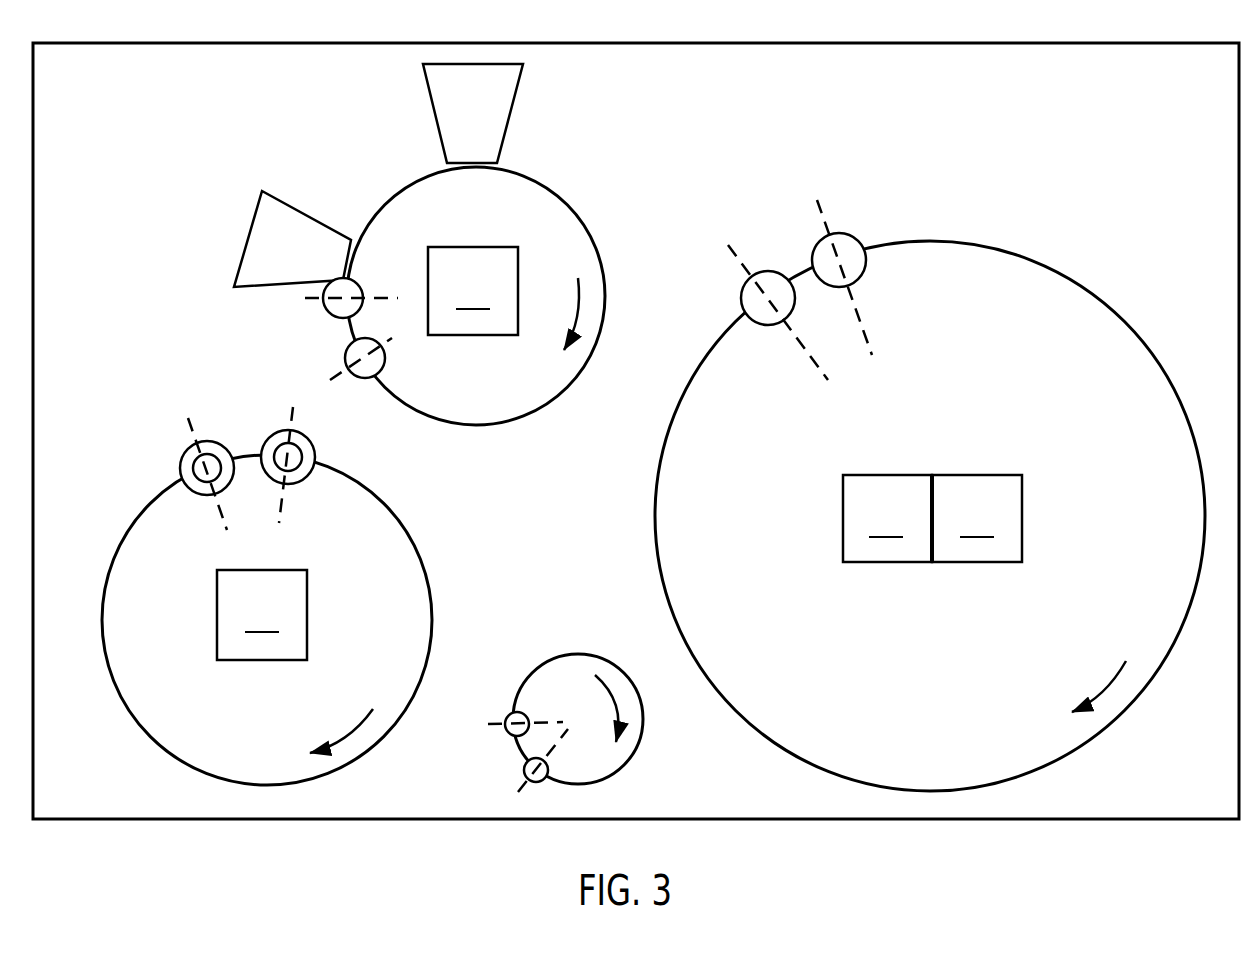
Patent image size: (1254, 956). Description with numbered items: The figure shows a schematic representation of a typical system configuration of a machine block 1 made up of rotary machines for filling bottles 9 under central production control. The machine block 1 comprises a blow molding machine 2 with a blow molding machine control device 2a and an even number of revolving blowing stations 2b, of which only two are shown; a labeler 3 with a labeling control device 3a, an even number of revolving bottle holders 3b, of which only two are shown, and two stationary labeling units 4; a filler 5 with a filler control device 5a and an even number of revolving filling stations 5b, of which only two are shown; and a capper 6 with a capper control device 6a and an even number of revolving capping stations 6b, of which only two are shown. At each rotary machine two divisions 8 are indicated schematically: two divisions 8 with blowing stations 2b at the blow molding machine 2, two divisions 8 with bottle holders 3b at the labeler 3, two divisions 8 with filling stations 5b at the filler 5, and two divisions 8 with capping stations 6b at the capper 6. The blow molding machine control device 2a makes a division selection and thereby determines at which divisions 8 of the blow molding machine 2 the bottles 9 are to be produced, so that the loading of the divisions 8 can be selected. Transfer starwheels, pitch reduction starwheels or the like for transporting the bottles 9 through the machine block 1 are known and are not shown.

The machine block 1 is at (1143, 43).
The blow molding machine 2 is at (431, 600).
The blow molding machine control device 2a is at (262, 615).
The blowing stations 2b is at (181, 460).
The labeler 3 is at (563, 393).
The labeling control device 3a is at (473, 291).
The bottle holders 3b is at (337, 313).
The labeling unit 4 is at (433, 103).
The filler 5 is at (1118, 316).
The filler control device 5a is at (887, 518).
The filling stations 5b is at (742, 300).
The capper 6 is at (627, 764).
The capper control device 6a is at (977, 518).
The capping stations 6b is at (505, 716).
The divisions 8 is at (371, 296).
The bottles 9 is at (270, 442).